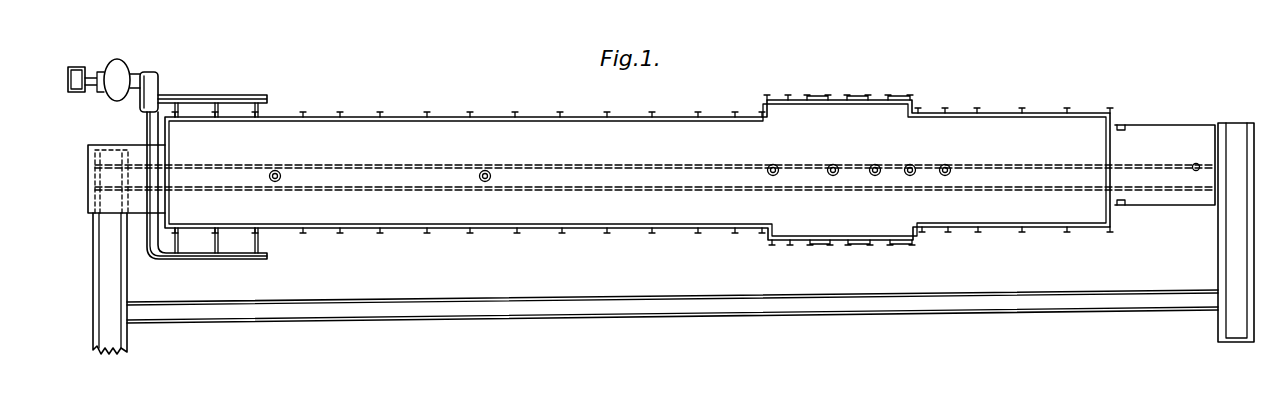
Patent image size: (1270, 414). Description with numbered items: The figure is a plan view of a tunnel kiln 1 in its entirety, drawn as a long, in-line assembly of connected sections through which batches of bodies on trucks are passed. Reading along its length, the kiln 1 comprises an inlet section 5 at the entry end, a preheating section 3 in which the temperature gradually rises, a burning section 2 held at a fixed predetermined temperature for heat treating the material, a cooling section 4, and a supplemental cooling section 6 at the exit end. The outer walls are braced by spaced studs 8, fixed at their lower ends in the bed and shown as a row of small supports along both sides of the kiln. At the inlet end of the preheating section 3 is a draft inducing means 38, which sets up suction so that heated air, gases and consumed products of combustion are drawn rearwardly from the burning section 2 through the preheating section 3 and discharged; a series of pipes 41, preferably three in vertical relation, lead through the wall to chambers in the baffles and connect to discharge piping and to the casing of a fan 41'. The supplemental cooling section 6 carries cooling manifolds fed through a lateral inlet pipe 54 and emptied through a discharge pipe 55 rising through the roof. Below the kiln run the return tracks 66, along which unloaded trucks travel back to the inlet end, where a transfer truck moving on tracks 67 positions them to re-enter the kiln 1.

The kiln 1 is at (653, 163).
The burning section 2 is at (859, 195).
The preheating section 3 is at (414, 194).
The cooling section 4 is at (1218, 243).
The inlet section 5 is at (133, 205).
The supplemental cooling section 6 is at (1165, 165).
The studs 8 is at (331, 100).
The draft inducing means 38 is at (128, 100).
The pipes 41 is at (226, 173).
The fan 41' is at (143, 74).
The inlet pipe 54 is at (1124, 128).
The discharge pipe 55 is at (1196, 171).
The tracks 66 is at (707, 298).
The tracks 67 is at (127, 262).